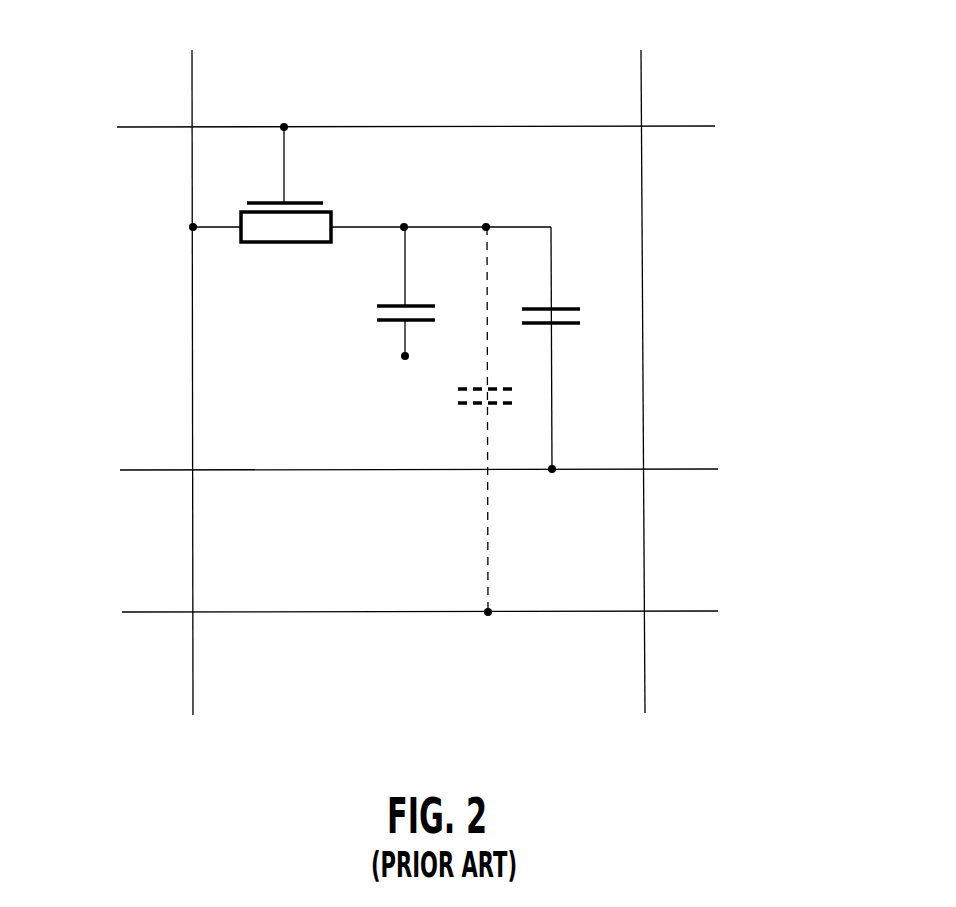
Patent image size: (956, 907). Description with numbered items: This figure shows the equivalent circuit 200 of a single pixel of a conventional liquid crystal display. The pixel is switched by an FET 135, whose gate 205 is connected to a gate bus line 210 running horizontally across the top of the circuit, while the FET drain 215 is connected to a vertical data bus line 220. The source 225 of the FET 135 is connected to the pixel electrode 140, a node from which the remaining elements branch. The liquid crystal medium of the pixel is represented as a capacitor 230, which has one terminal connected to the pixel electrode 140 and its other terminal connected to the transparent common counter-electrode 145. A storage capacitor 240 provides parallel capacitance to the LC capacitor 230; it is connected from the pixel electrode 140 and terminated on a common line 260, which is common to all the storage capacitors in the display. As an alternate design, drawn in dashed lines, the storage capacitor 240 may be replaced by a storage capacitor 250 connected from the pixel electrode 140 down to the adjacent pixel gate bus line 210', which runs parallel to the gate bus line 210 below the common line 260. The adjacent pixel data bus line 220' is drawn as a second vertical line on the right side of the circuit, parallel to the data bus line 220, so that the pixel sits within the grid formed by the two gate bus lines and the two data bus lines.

The prior art pixel circuit 200 is at (182, 757).
The gate 205 is at (287, 165).
The gate bus line 210 is at (363, 154).
The adjacent pixel gate bus line 210' is at (384, 661).
The FET drain 215 is at (215, 227).
The data bus line 220 is at (130, 366).
The adjacent pixel data bus line 220' is at (706, 380).
The source 225 is at (370, 227).
The pixel electrode 140 is at (404, 227).
The FET 135 is at (272, 242).
The capacitor 230 is at (387, 303).
The transparent common counter-electrode 145 is at (405, 356).
The storage capacitor 240 is at (563, 302).
The storage capacitor 250 is at (465, 405).
The common line 260 is at (159, 470).